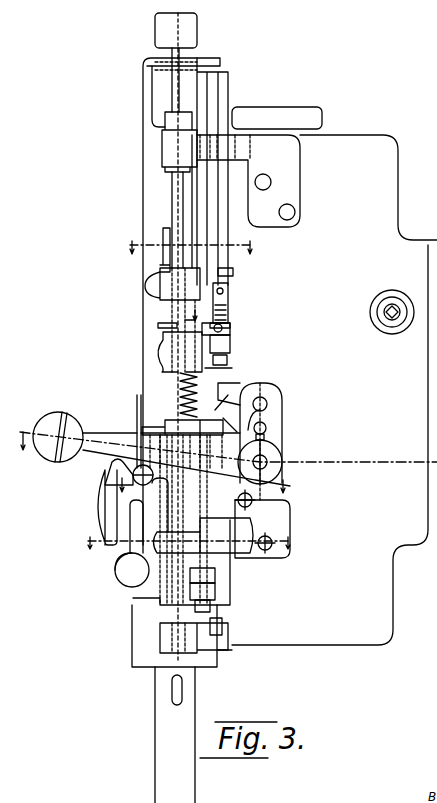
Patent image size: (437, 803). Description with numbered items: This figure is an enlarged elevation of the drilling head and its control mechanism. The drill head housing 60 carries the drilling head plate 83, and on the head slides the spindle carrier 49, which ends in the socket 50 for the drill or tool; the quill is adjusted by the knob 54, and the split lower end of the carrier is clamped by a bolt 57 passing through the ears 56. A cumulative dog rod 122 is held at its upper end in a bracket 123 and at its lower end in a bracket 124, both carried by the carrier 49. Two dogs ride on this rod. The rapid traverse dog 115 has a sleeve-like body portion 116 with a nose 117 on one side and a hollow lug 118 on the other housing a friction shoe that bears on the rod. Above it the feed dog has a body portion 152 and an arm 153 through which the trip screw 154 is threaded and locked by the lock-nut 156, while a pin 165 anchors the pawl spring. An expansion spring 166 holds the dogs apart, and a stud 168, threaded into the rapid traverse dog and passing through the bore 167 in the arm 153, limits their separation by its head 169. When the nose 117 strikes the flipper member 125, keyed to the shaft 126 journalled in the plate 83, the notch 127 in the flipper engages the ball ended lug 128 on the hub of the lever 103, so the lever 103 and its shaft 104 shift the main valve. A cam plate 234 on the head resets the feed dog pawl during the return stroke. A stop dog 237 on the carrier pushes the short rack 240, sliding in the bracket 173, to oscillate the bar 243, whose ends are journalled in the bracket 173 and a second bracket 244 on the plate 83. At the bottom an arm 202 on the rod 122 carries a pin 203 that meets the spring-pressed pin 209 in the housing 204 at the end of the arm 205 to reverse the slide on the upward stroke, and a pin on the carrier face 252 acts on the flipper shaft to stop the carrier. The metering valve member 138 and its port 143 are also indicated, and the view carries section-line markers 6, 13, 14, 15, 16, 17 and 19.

The drilling head plate 83 is at (396, 178).
The bracket 123 is at (160, 36).
The cumulative dog rod 122 is at (188, 56).
The face 252 is at (216, 86).
The second bracket 244 is at (236, 135).
The drill head housing 60 is at (305, 131).
The spindle carrier 49 is at (148, 150).
The oscillatable bar 243 is at (174, 187).
The stop dog 237 is at (164, 232).
The section line 15- 15 is at (190, 255).
The cam plate 234 is at (232, 276).
The port 143 is at (162, 288).
The trip or dog screw 154 is at (230, 310).
The head 169 is at (232, 322).
The lock-nut 156 is at (224, 330).
The bore 167 is at (232, 337).
The arm 153 is at (232, 349).
The stud 168 is at (225, 368).
The pin 165 is at (168, 323).
The section line 16 is at (199, 312).
The body portion 152 is at (163, 340).
The expansion spring 166 is at (180, 389).
The lug 118 is at (124, 427).
The lever 103 is at (118, 433).
The sleeve-like body portion 116 is at (160, 422).
The section line 6 is at (22, 434).
The shaft 126 is at (270, 388).
The rapid traverse dog 115 is at (237, 397).
The section line 14 is at (287, 515).
The flipper member 125 is at (268, 402).
The nose 117 is at (260, 420).
The notch 127 is at (267, 425).
The ball ended lug 128 is at (265, 440).
The shaft 104 is at (268, 462).
The metering valve member 138 is at (392, 320).
The short rack 240 is at (112, 473).
The section line 17- 17 is at (205, 488).
The knob 54 is at (105, 500).
The bracket 173 is at (282, 528).
The section line 13- 13 is at (190, 551).
The ear 56 is at (118, 570).
The clamping bolt 57 is at (128, 578).
The bracket 124 is at (148, 600).
The socket 50 is at (145, 663).
The housing 204 is at (218, 588).
The pin 209 is at (213, 615).
The arm 205 is at (216, 596).
The pin 203 is at (224, 628).
The section line 19 is at (209, 633).
The arm 202 is at (218, 650).